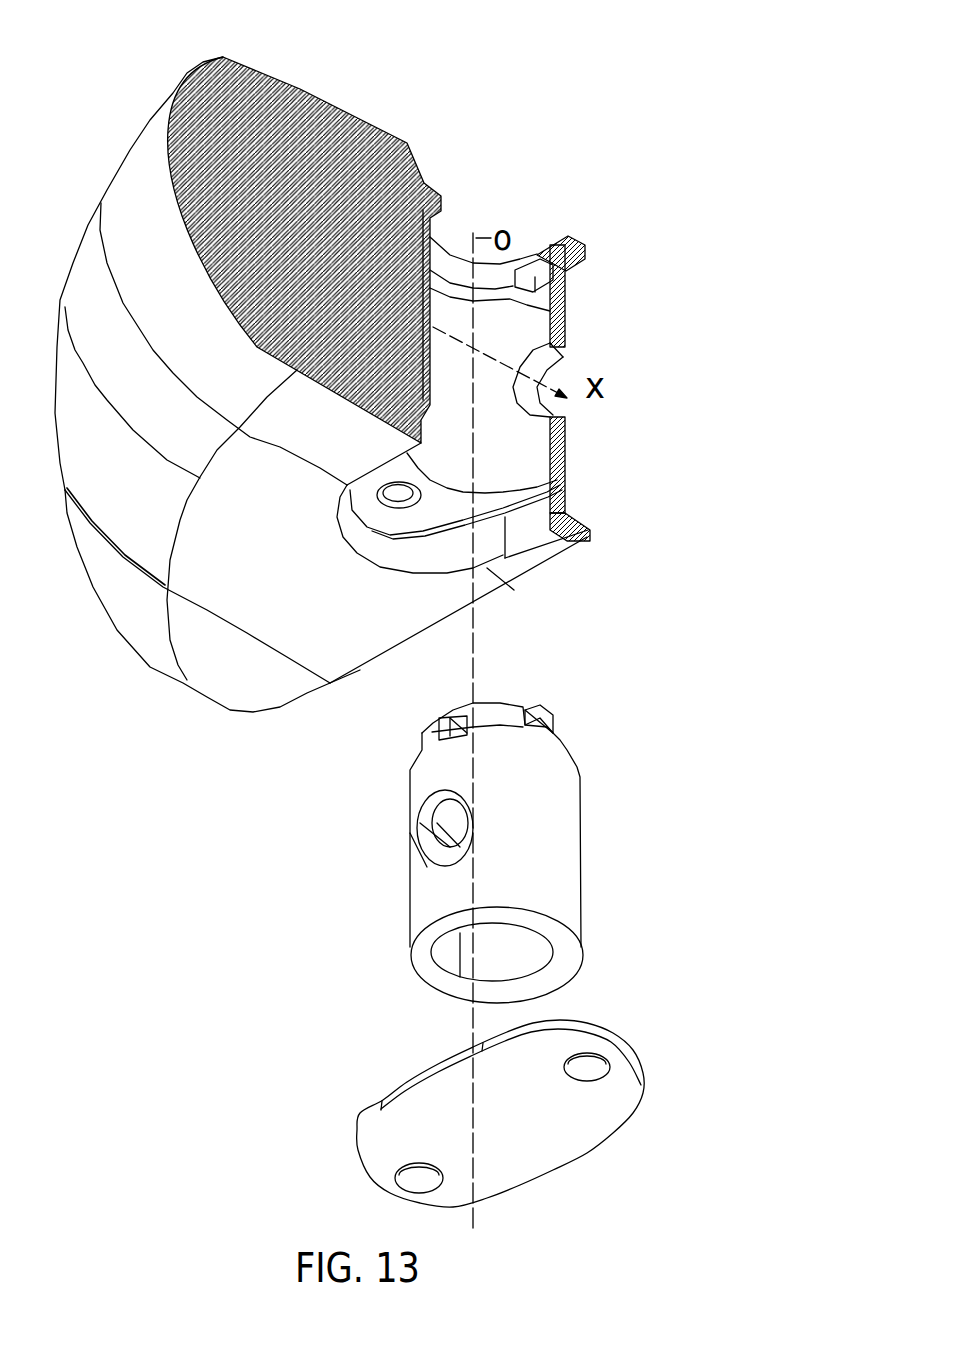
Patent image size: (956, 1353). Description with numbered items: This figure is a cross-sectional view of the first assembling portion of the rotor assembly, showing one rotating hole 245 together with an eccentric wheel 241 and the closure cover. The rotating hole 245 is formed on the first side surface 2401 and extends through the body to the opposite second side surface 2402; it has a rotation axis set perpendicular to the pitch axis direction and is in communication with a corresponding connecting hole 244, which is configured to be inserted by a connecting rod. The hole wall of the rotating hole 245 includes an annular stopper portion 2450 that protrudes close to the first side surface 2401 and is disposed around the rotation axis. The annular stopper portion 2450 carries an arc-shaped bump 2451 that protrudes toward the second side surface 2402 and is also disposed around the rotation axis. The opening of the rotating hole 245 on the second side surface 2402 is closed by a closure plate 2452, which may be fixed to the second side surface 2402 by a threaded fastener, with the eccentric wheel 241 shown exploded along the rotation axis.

The first side surface 2401 is at (379, 121).
The second side surface 2402 is at (530, 562).
The annular stopper portion 2450 is at (556, 272).
The arc-shaped bump 2451 is at (528, 310).
The connecting hole 244 is at (543, 357).
The rotating hole 245 is at (588, 388).
The eccentric wheel 241 is at (563, 857).
The closure plate 2452 is at (507, 1162).